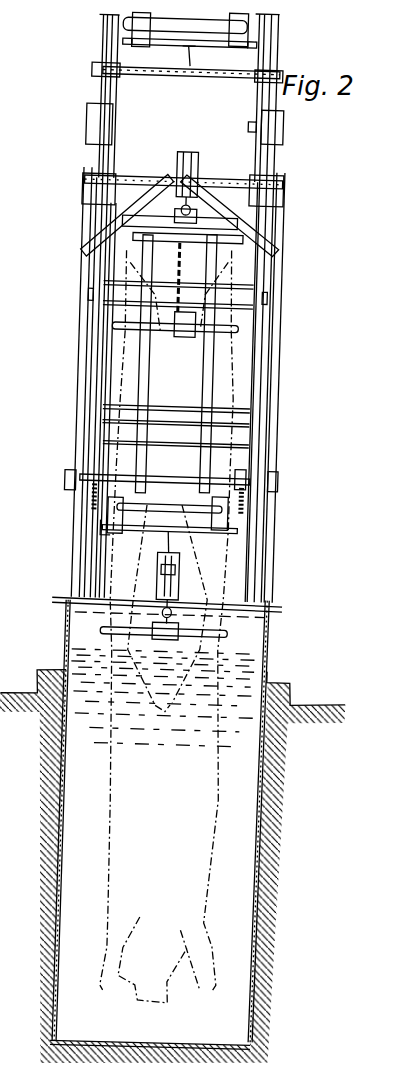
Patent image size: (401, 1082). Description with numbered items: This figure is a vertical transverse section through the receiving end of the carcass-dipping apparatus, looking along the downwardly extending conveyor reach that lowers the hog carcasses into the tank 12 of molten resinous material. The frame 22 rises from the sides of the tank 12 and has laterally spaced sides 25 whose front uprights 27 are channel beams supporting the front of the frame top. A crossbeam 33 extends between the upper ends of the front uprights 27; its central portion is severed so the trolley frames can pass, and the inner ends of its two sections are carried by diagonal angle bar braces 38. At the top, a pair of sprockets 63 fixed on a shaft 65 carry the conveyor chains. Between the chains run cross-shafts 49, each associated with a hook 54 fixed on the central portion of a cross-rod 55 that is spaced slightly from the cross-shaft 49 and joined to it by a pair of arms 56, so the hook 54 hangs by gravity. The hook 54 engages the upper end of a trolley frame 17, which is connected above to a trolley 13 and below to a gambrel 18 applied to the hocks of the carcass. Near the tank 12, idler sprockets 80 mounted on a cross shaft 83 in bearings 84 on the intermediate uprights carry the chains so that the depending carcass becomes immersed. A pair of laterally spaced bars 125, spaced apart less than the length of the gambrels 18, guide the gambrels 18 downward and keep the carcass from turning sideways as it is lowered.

The tank 12 is at (71, 634).
The trolley 13 is at (181, 554).
The trolley frame 17 is at (161, 600).
The gambrel 18 is at (232, 328).
The frame 22 is at (72, 373).
The frame side 25 is at (267, 379).
The front upright 27 is at (81, 301).
The crossbeam 33 is at (109, 184).
The diagonal angle bar brace 38 is at (116, 228).
The cross-shaft 49 is at (208, 21).
The hook 54 is at (178, 55).
The cross-rod 55 is at (150, 46).
The arm 56 is at (108, 531).
The sprocket 63 is at (97, 91).
The shaft 65 is at (203, 77).
The idler sprocket 80 is at (91, 501).
The cross shaft 83 is at (168, 473).
The bearing 84 is at (70, 481).
The bar 125 is at (145, 358).